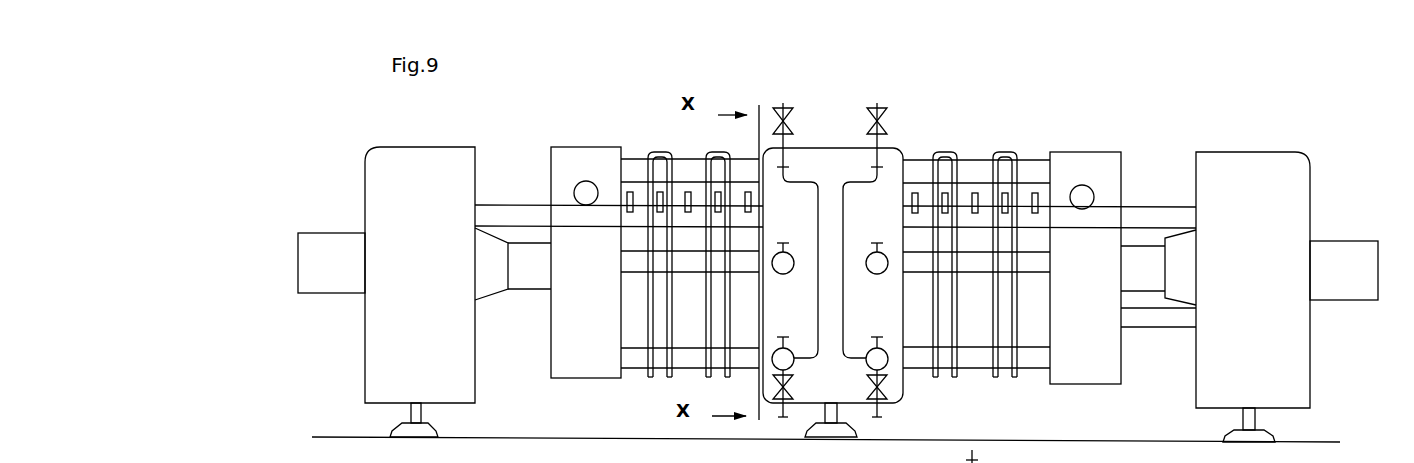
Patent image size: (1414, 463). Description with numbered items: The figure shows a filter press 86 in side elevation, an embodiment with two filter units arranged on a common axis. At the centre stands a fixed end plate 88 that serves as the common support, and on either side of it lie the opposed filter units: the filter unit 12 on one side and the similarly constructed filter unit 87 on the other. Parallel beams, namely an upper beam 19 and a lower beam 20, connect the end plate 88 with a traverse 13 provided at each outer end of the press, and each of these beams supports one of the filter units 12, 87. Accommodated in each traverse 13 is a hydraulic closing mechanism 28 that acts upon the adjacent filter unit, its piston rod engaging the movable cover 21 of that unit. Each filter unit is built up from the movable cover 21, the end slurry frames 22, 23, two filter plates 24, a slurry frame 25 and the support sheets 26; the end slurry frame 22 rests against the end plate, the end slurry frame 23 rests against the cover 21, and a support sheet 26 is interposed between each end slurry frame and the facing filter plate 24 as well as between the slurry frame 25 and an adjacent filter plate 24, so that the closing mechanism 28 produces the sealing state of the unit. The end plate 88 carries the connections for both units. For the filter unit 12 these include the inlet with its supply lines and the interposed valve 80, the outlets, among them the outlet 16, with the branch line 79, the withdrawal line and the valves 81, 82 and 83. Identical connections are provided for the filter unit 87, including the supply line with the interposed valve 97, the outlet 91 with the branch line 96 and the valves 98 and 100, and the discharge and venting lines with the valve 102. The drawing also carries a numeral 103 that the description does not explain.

The filter press 86 is at (323, 109).
The filter unit 12 is at (997, 125).
The traverse 13 is at (385, 345).
The outlet 16 is at (885, 156).
The beam 19 is at (1148, 218).
The beam 20 is at (1168, 316).
The movable cover 21 is at (579, 165).
The end slurry frame 22 is at (918, 167).
The end slurry frame 23 is at (632, 315).
The filter plate 24 is at (947, 168).
The slurry frame 25 is at (978, 378).
The support sheet 26 is at (670, 337).
The hydraulic closing mechanism 28 is at (343, 307).
The branch line 79 is at (845, 226).
The valve 80 is at (878, 268).
The valve 81 is at (880, 363).
The valve 82 is at (879, 167).
The valve 83 is at (887, 402).
The filter unit 87 is at (640, 131).
The fixed end plate 88 is at (817, 167).
The outlet 91 is at (786, 169).
The branch line 96 is at (828, 247).
The valve 97 is at (785, 268).
The valve 98 is at (787, 361).
The valve 100 is at (780, 395).
The valve 102 is at (783, 104).
The connecting line 103 is at (1035, 373).